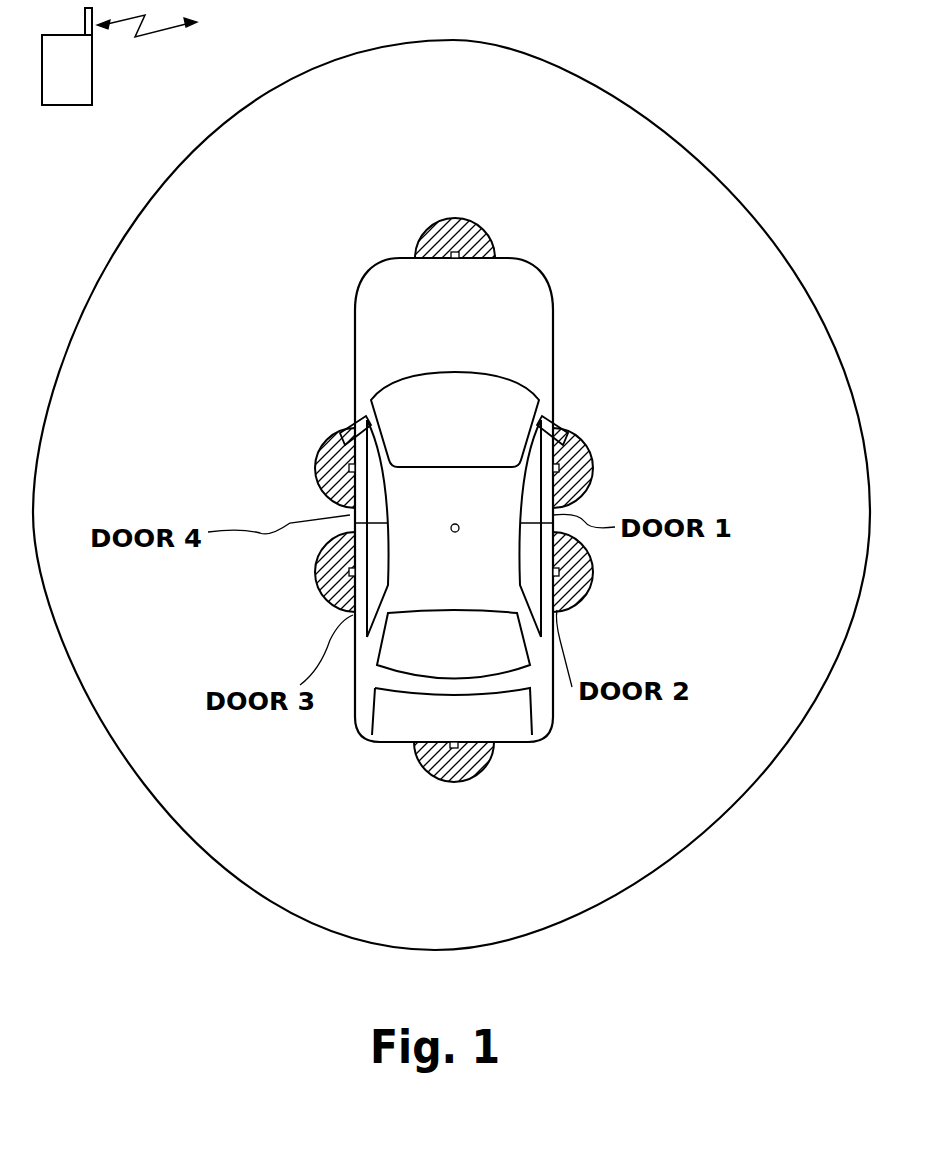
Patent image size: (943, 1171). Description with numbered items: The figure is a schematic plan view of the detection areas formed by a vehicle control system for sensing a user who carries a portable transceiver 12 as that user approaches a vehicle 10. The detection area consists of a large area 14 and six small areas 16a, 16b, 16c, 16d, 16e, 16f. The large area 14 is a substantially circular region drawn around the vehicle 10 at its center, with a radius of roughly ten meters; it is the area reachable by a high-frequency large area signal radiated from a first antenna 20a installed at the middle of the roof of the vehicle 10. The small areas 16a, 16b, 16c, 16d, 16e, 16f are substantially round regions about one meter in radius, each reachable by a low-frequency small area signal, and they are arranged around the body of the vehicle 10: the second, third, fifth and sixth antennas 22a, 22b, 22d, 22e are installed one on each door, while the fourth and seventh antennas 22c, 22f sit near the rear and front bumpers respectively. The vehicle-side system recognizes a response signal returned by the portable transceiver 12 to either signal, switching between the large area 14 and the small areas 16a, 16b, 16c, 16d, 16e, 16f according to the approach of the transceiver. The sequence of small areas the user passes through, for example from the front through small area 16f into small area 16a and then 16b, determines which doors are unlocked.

The vehicle 10 is at (535, 348).
The portable transceiver 12 is at (55, 97).
The large area 14 is at (713, 186).
The small area 16a is at (595, 462).
The small area 16b is at (595, 585).
The small area 16c is at (480, 760).
The small area 16d is at (323, 593).
The small area 16e is at (317, 462).
The small area 16f is at (485, 222).
The first antenna 20a is at (455, 533).
The second antenna 22a is at (580, 447).
The third antenna 22b is at (562, 580).
The fourth antenna 22c is at (427, 780).
The fifth antenna 22d is at (313, 562).
The sixth antenna 22e is at (325, 445).
The seventh antenna 22f is at (440, 224).